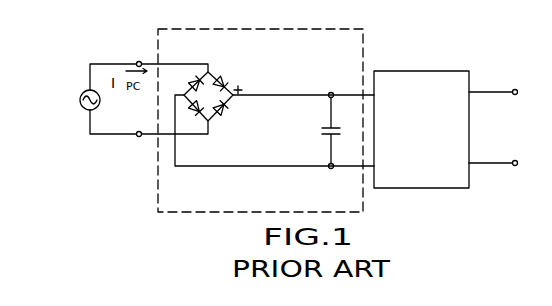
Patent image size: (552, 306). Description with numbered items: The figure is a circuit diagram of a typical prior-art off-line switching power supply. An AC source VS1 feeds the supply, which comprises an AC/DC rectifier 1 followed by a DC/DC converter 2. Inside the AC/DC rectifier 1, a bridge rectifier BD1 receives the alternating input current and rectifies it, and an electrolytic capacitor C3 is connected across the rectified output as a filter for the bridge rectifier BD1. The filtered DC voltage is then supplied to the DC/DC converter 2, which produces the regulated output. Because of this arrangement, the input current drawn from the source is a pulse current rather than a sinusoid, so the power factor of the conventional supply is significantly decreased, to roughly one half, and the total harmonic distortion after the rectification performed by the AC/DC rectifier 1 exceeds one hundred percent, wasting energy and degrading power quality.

The AC/DC rectifier 1 is at (292, 110).
The DC/DC converter 2 is at (418, 78).
The bridge rectifier BD1 is at (215, 73).
The electrolytic capacitor C3 is at (314, 131).
The AC voltage source VS1 is at (71, 96).